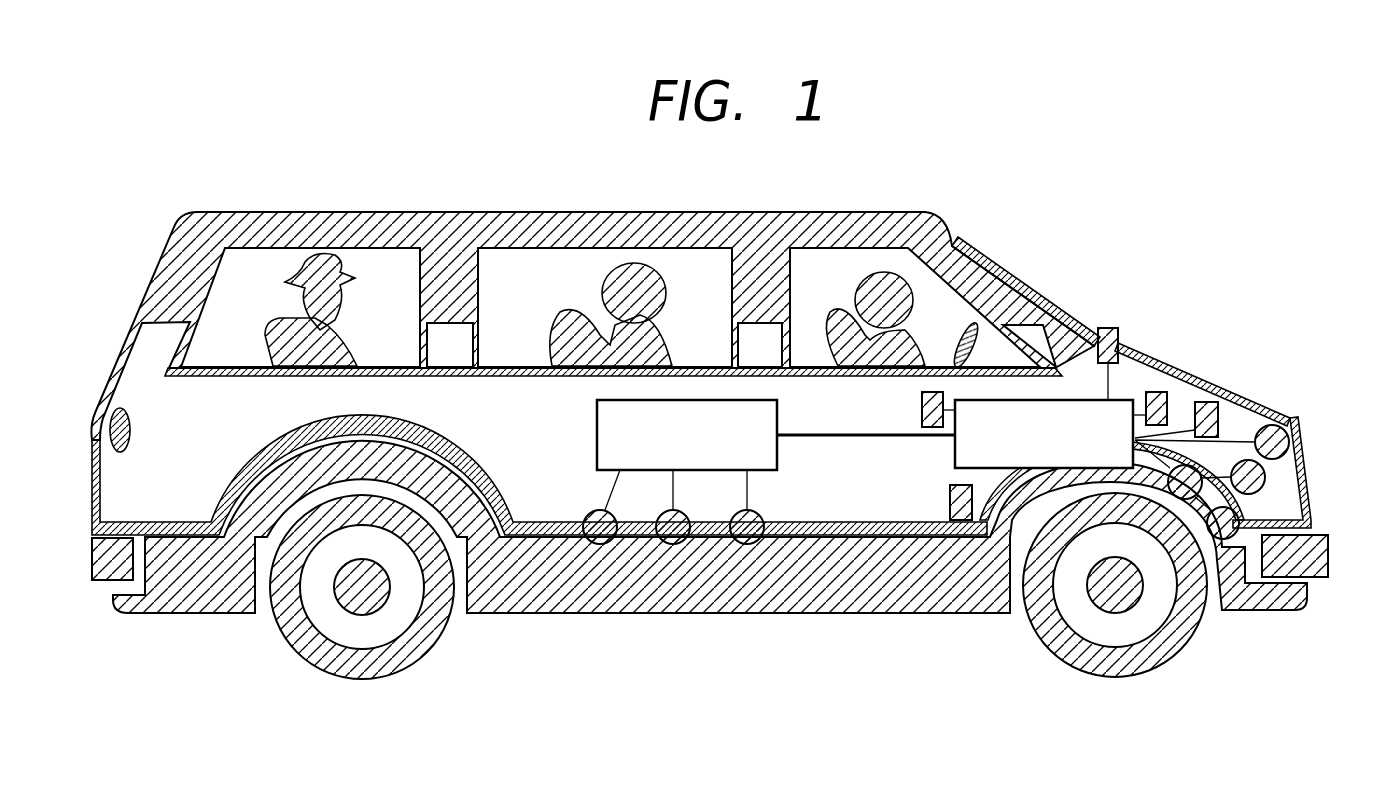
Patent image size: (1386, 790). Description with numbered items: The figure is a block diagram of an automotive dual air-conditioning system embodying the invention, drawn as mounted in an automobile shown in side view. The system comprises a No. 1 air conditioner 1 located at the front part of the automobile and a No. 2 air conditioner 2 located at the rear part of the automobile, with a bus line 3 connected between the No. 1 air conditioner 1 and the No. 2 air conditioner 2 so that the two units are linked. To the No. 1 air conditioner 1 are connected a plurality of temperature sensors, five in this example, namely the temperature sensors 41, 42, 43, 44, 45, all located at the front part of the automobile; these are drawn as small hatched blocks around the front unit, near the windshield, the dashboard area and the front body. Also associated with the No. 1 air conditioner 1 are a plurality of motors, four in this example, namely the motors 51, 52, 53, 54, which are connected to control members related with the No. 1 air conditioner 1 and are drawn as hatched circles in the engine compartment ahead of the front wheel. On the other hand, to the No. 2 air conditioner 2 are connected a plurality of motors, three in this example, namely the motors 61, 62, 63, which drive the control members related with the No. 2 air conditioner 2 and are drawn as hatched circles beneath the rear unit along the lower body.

The No. 1 air conditioner 1 is at (1072, 400).
The No. 2 air conditioner 2 is at (597, 446).
The bus line 3 is at (862, 437).
The temperature sensor 41 is at (1118, 338).
The temperature sensor 42 is at (1155, 392).
The temperature sensor 43 is at (1207, 402).
The temperature sensor 44 is at (950, 500).
The temperature sensor 45 is at (932, 392).
The motor 51 is at (1289, 443).
The motor 52 is at (1265, 477).
The motor 53 is at (1240, 526).
The motor 54 is at (1177, 497).
The motor 61 is at (615, 527).
The motor 62 is at (690, 527).
The motor 63 is at (765, 527).